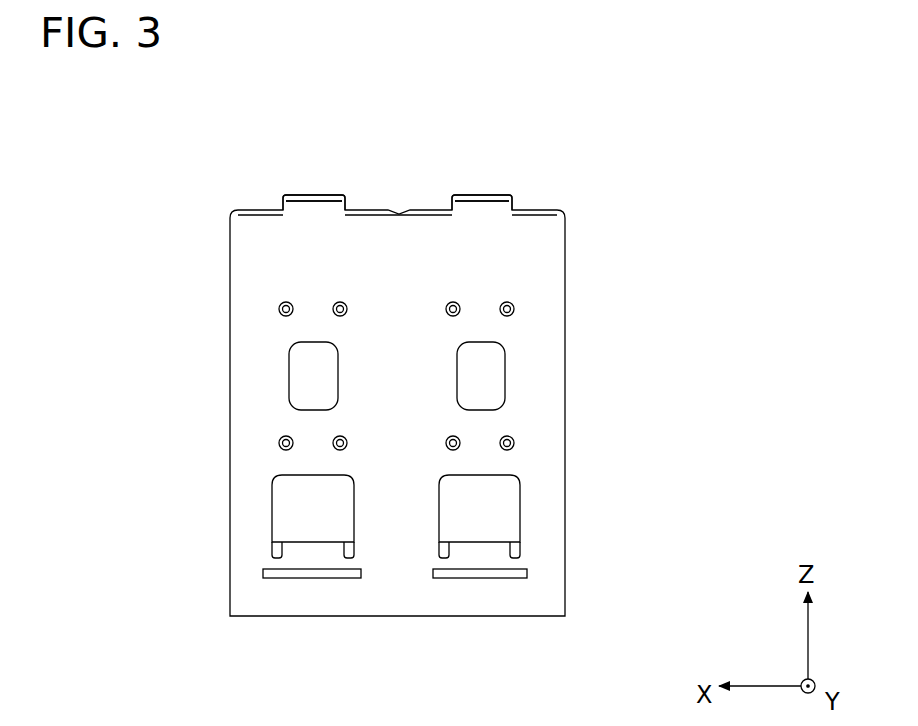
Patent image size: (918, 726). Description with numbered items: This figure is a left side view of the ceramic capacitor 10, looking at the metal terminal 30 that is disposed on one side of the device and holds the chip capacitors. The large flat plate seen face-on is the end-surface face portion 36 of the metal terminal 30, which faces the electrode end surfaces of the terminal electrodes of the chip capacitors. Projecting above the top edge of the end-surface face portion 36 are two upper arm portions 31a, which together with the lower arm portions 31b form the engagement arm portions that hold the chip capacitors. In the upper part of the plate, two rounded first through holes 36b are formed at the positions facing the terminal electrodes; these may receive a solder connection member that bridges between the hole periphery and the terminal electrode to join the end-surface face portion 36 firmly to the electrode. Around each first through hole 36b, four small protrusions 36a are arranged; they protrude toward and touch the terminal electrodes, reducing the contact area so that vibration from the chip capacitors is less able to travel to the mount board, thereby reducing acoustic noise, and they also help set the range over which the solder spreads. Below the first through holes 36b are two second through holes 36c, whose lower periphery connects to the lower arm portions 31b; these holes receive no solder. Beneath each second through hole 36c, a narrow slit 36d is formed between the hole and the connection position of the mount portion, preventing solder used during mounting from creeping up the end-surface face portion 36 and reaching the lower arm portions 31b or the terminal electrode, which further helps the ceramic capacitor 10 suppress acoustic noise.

The ceramic capacitor 10 is at (620, 195).
The metal terminal 30 is at (220, 238).
The upper arm portion 31a is at (318, 195).
The lower arm portion 31b is at (295, 548).
The end-surface face portion 36 is at (492, 260).
The protrusions 36a is at (279, 308).
The first through holes 36b is at (298, 371).
The second through holes 36c is at (290, 503).
The slit 36d is at (300, 574).